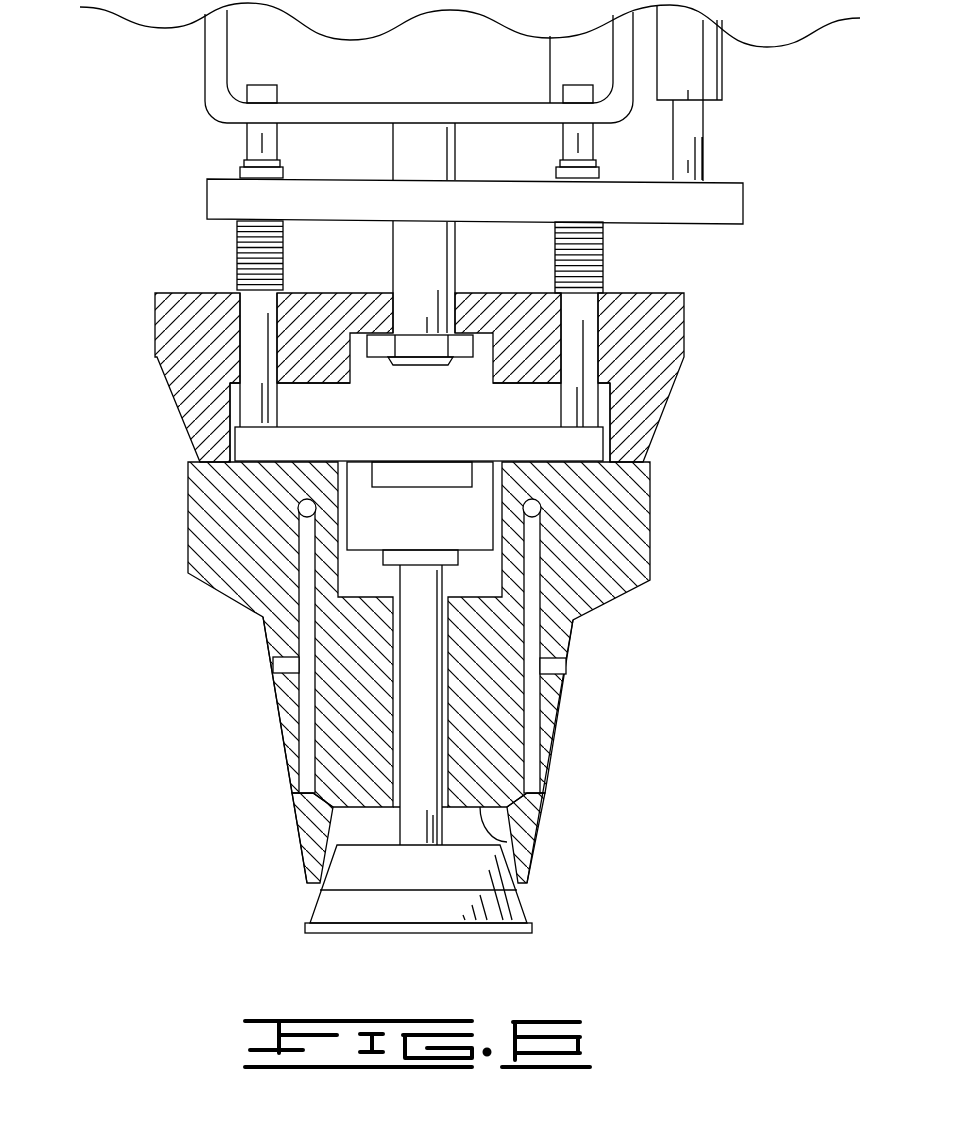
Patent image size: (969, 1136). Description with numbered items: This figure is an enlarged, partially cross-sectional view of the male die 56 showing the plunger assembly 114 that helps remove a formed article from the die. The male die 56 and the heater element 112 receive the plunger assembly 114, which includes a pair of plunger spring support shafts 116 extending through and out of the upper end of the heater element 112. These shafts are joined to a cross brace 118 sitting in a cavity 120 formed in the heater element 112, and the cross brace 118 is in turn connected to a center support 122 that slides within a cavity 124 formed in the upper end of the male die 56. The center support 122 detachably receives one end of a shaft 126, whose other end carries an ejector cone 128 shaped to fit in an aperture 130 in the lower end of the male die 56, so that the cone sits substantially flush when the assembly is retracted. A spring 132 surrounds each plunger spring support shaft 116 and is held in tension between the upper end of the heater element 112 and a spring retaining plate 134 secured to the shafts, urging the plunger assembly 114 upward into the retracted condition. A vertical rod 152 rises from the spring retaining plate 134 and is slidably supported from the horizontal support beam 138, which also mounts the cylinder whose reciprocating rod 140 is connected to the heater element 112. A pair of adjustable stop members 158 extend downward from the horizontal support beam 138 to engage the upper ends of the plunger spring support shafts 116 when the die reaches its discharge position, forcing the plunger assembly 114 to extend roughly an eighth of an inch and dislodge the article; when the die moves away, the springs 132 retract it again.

The horizontal support beam 138 is at (205, 60).
The adjustable stop members 158 is at (245, 140).
The vertical rod 152 is at (703, 160).
The spring retaining plate 134 is at (745, 201).
The spring 132 is at (237, 249).
The reciprocating rod 140 is at (453, 253).
The heater element 112 is at (684, 331).
The plunger spring support shafts 116 is at (250, 347).
The cavity 120 is at (300, 390).
The cross brace 118 is at (236, 443).
The center support 122 is at (490, 498).
The cavity 124 is at (365, 585).
The male die 56 is at (280, 727).
The shaft 126 is at (425, 740).
The aperture 130 is at (522, 848).
The ejector cone 128 is at (524, 910).
The plunger assembly 114 is at (310, 903).